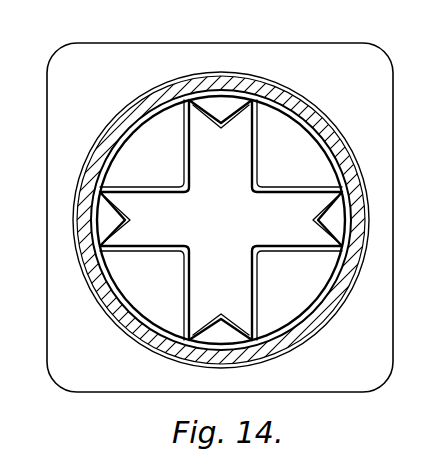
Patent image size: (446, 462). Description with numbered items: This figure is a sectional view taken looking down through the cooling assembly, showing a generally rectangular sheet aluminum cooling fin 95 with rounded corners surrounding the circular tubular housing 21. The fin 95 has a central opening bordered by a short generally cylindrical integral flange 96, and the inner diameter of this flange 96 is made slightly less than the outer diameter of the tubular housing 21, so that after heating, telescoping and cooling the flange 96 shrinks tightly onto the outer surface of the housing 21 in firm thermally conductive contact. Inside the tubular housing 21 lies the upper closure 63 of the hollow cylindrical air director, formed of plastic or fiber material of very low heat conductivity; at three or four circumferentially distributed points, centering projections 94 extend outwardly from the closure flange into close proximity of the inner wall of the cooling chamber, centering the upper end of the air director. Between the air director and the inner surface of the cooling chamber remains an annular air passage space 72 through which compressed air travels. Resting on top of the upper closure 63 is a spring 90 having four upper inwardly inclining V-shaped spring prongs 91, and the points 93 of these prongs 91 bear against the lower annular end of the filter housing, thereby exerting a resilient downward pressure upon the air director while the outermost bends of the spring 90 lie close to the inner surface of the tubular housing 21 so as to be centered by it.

The tubular housing 21 is at (322, 134).
The upper closure 63 is at (303, 285).
The annular air passage space 72 is at (117, 292).
The spring 90 is at (200, 242).
The V-shaped spring prongs 91 is at (220, 104).
The points 93 is at (318, 221).
The centering projections 94 is at (285, 93).
The cooling fins 95 is at (350, 52).
The cylindrical flanges 96 is at (332, 321).